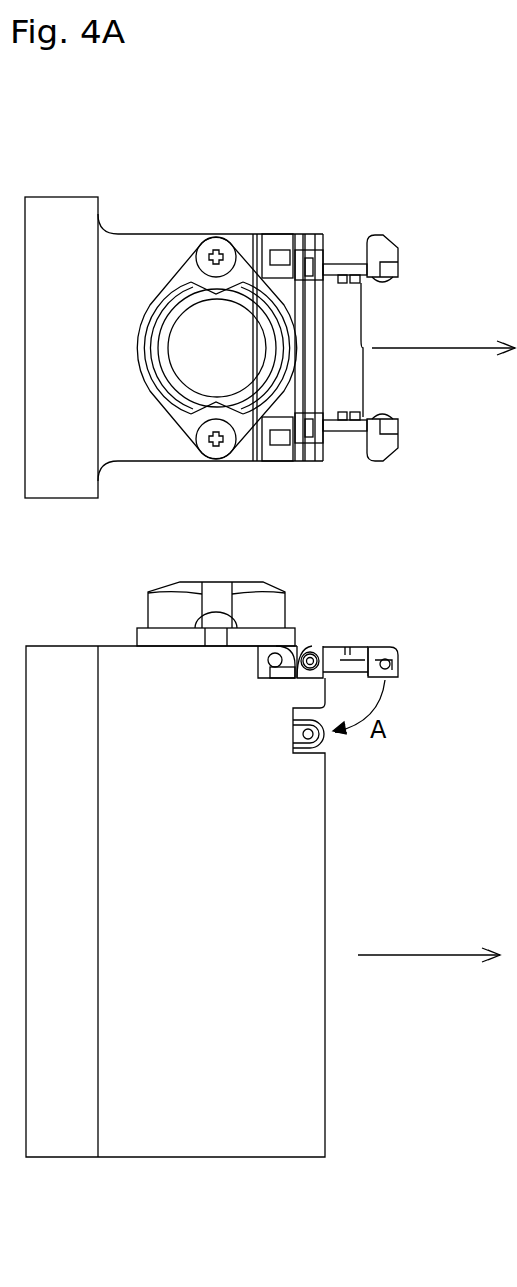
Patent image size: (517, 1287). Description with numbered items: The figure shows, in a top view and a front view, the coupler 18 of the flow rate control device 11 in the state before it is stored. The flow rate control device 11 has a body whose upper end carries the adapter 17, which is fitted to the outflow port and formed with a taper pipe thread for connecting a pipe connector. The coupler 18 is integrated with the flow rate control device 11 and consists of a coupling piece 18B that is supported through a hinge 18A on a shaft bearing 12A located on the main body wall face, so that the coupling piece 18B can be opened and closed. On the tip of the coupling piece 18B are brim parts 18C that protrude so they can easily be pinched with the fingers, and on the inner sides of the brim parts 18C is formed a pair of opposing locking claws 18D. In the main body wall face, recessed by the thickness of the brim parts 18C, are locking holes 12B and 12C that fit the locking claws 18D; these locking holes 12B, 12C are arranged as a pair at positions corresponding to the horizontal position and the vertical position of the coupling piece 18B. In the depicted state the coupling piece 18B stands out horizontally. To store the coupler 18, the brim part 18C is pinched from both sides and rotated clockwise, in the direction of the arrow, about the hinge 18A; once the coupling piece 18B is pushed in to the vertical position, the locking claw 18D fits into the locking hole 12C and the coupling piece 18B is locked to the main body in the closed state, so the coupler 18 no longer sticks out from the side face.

The flow rate control device 11 is at (77, 630).
The shaft bearing 12A is at (310, 652).
The locking hole 12B is at (270, 663).
The locking hole 12C is at (300, 735).
The adapter 17 is at (158, 302).
The coupler 18 is at (405, 683).
The hinge 18A is at (308, 238).
The coupling piece 18B is at (363, 331).
The brim part 18C is at (392, 242).
The locking claw 18D is at (382, 281).